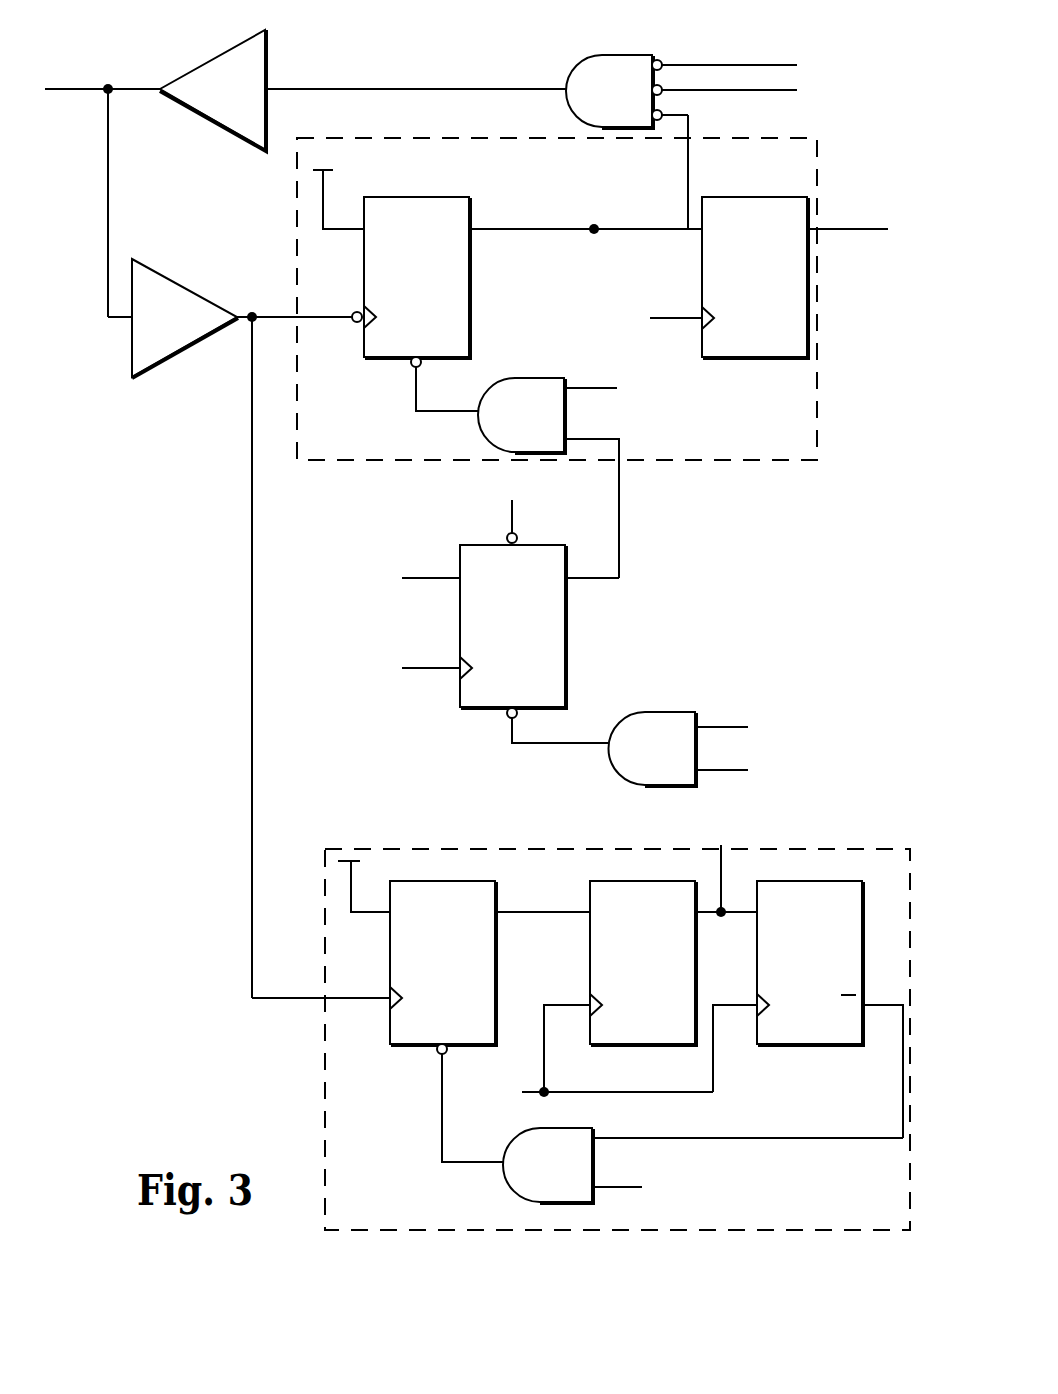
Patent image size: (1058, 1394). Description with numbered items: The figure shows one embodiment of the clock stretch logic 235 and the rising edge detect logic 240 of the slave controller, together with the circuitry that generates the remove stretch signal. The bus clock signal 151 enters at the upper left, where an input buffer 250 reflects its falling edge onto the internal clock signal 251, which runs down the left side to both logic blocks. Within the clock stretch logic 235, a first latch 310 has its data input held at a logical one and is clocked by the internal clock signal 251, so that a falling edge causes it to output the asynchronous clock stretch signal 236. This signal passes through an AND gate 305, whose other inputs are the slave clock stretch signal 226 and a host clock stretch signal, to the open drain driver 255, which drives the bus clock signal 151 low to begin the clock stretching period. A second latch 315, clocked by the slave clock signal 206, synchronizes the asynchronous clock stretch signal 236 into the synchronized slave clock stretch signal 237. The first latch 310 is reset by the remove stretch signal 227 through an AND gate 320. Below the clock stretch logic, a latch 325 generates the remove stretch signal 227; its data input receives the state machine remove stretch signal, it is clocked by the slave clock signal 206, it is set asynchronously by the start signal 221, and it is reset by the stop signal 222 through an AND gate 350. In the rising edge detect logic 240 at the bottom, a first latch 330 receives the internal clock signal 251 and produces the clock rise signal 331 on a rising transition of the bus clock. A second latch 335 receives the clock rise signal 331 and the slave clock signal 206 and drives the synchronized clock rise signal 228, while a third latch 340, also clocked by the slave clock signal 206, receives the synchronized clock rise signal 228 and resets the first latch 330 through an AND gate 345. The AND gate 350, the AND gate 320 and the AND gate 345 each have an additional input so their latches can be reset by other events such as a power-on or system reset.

The bus clock signal 151 is at (77, 92).
The open drain driver 255 is at (223, 50).
The input buffer 250 is at (182, 328).
The internal clock signal 251 is at (246, 788).
The AND gate 305 is at (627, 104).
The slave clock stretch signal 226 is at (717, 93).
The clock stretch logic 235 is at (777, 455).
The first latch 310 is at (433, 288).
The asynchronous clock stretch signal 236 is at (522, 232).
The second latch 315 is at (770, 289).
The synchronized slave clock stretch signal 237 is at (876, 232).
The AND gate 320 is at (540, 424).
The start signal 221 is at (507, 520).
The latch 325 is at (527, 639).
The remove stretch signal 227 is at (620, 530).
The slave clock signal 206 is at (426, 673).
The AND gate 350 is at (672, 758).
The stop signal 222 is at (739, 722).
The rising edge detect logic 240 is at (907, 1229).
The first latch 330 is at (458, 973).
The clock rise signal 331 is at (556, 917).
The second latch 335 is at (657, 976).
The synchronized clock rise signal 228 is at (712, 852).
The third latch 340 is at (823, 976).
The AND gate 345 is at (565, 1173).